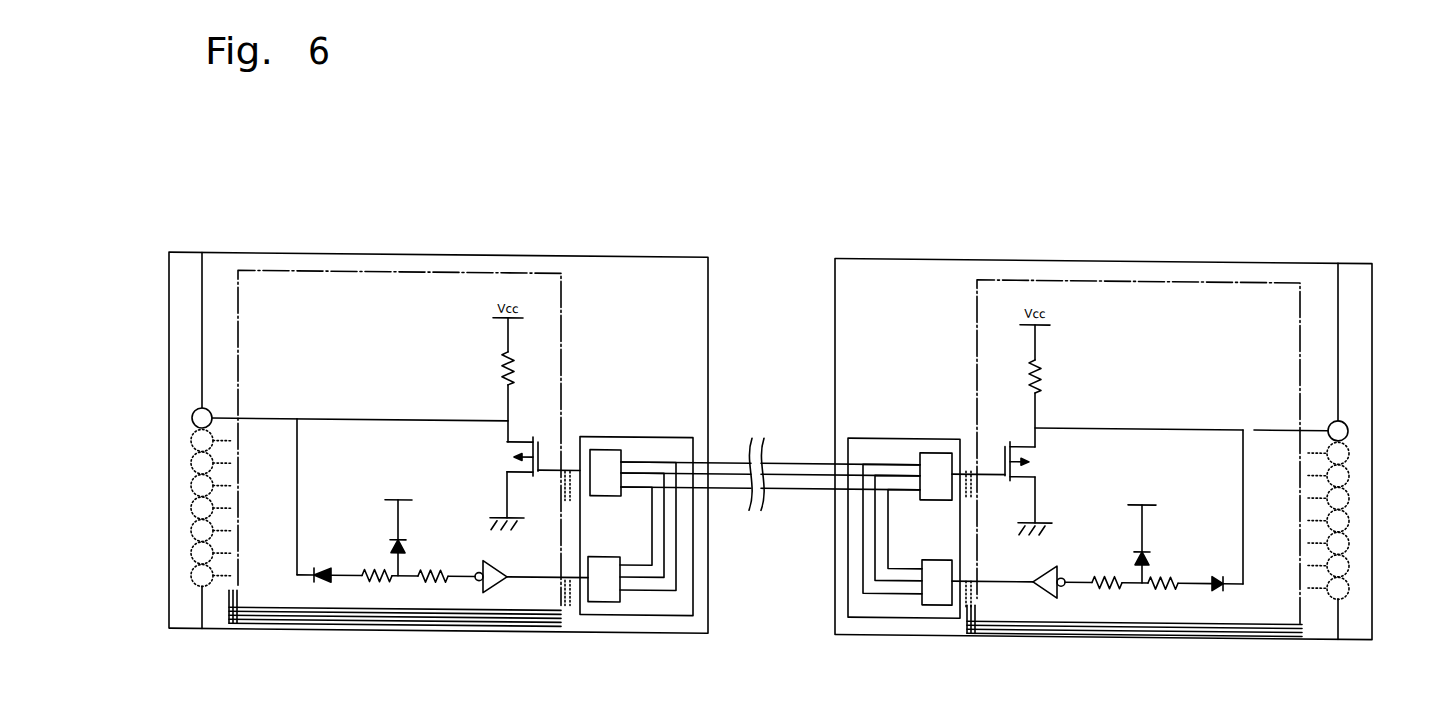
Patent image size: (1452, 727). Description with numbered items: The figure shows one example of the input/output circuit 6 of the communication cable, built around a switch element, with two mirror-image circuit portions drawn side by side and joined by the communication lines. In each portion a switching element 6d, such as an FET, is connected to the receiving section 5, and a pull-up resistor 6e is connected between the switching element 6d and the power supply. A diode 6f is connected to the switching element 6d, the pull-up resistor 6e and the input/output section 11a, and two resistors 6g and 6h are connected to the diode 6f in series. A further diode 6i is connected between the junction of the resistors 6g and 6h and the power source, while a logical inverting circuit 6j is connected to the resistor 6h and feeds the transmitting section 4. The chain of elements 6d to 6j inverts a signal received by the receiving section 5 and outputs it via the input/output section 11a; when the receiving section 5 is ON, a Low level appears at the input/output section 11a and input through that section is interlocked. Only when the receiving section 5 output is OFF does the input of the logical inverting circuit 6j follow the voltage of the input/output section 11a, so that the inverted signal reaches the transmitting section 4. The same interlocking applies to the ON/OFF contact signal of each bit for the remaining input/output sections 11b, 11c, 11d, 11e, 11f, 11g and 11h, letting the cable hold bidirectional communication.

The transmitting section 4 is at (600, 596).
The receiving section 5 is at (612, 444).
The input/output circuit 6 is at (400, 268).
The switching element 6d is at (541, 447).
The pull-up resistor 6e is at (501, 370).
The diode 6f is at (322, 577).
The resistor 6g is at (372, 576).
The resistor 6h is at (432, 576).
The diode 6i is at (398, 576).
The logical inverting circuit 6j is at (497, 580).
The input/output section 11a is at (192, 413).
The input/output section 11b is at (191, 438).
The input/output section 11c is at (191, 461).
The input/output section 11d is at (191, 483).
The input/output section 11e is at (191, 506).
The input/output section 11f is at (191, 528).
The input/output section 11g is at (191, 551).
The input/output section 11h is at (191, 573).